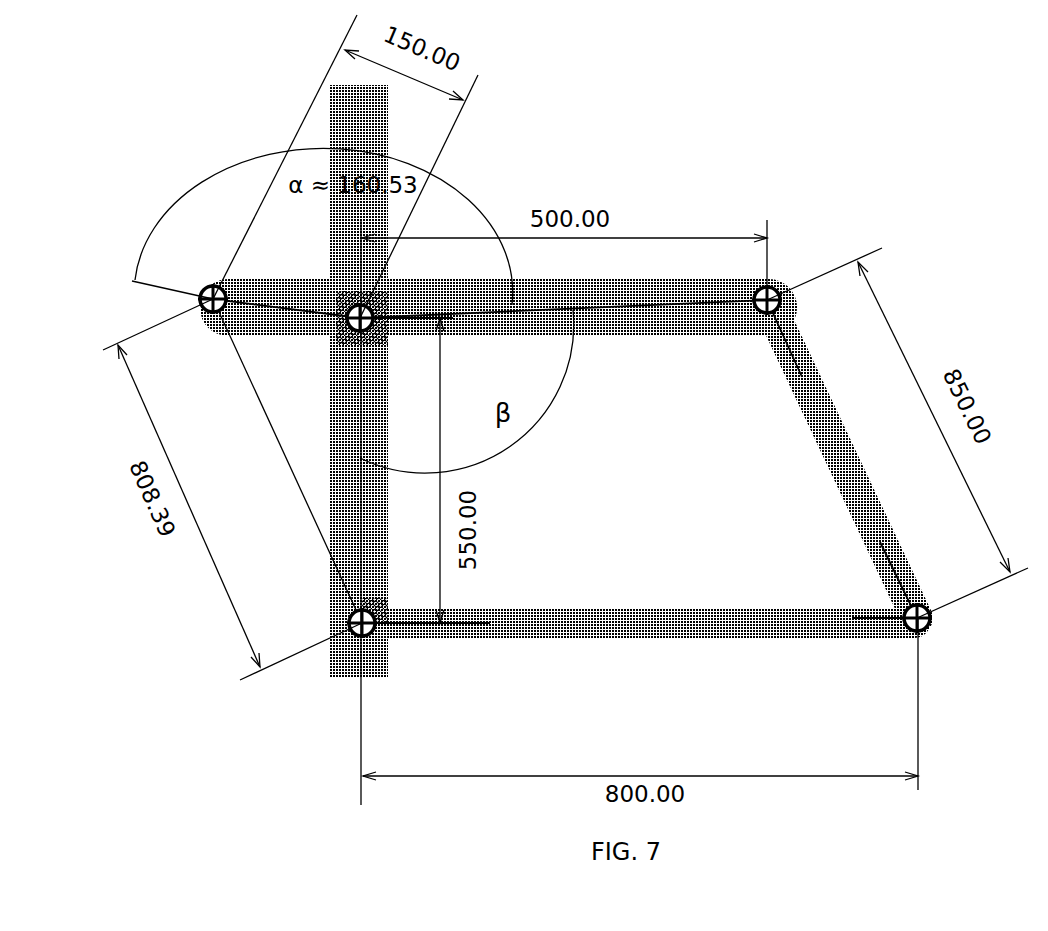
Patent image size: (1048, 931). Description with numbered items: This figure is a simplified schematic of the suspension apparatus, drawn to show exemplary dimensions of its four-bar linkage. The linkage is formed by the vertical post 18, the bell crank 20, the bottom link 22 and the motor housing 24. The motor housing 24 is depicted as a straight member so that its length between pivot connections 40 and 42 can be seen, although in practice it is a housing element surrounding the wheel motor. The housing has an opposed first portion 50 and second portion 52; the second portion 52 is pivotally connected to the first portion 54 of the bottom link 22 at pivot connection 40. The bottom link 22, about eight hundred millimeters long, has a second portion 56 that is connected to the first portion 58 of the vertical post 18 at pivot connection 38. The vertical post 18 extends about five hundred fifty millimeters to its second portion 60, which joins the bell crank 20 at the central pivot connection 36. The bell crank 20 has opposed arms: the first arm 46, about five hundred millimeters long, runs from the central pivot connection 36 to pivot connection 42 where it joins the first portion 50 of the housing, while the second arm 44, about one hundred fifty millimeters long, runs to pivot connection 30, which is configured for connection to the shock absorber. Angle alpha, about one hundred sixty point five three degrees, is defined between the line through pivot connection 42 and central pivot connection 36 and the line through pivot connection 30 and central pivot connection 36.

The vertical post 18 is at (345, 398).
The bell crank 20 is at (580, 275).
The bottom link 22 is at (650, 635).
The motor housing 24 is at (870, 475).
The pivot connection 30 is at (200, 298).
The central pivot connection 36 is at (347, 335).
The pivot connection 38 is at (355, 640).
The pivot connection 40 is at (923, 633).
The pivot connection 42 is at (772, 280).
The second arm 44 is at (273, 306).
The first arm 46 is at (648, 318).
The first portion 50 is at (790, 333).
The second portion 52 is at (908, 578).
The first portion 54 is at (880, 622).
The second portion 56 is at (413, 627).
The first portion 58 is at (365, 600).
The second portion 60 is at (345, 290).